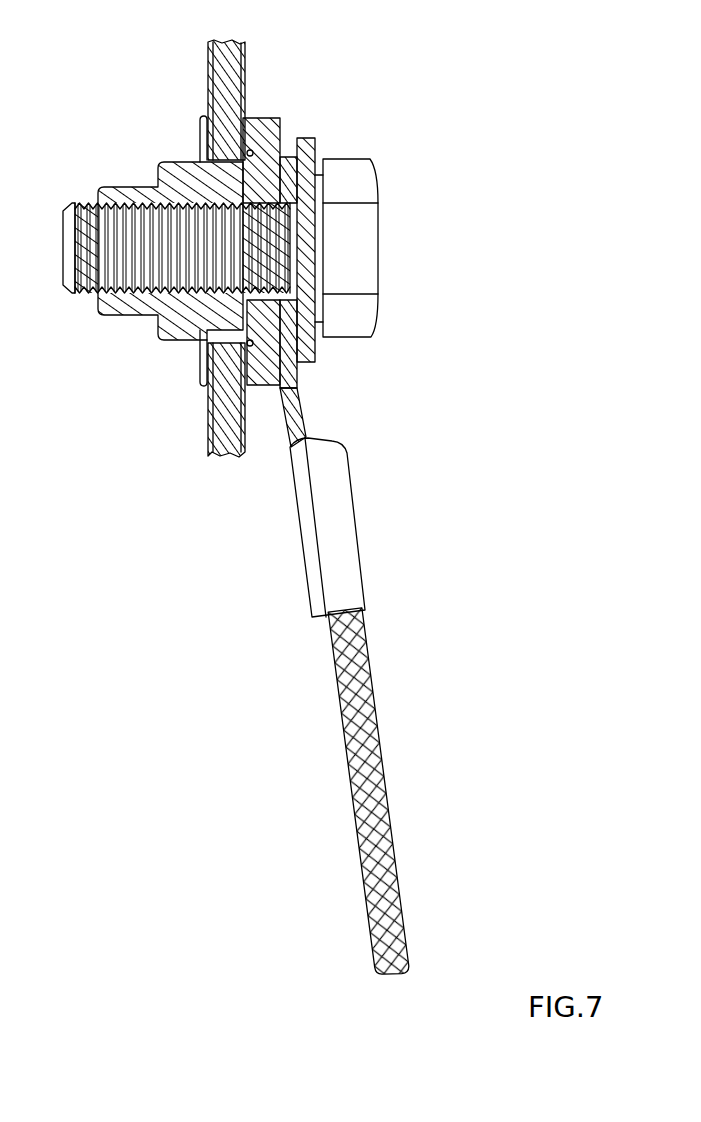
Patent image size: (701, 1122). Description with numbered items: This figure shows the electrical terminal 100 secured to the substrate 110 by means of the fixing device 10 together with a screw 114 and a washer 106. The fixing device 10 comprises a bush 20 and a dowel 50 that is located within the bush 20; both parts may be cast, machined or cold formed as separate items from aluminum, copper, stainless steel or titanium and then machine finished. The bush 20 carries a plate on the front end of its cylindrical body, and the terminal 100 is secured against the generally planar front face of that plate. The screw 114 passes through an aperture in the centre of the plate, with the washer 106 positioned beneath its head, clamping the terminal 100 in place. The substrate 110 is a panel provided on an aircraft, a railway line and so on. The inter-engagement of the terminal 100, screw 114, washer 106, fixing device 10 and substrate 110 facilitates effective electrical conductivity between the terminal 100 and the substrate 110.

The fixing device 10 is at (292, 128).
The bush 20 is at (270, 118).
The dowel 50 is at (162, 192).
The electrical terminal 100 is at (342, 519).
The washer 106 is at (307, 153).
The substrate 110 is at (207, 450).
The screw 114 is at (353, 222).